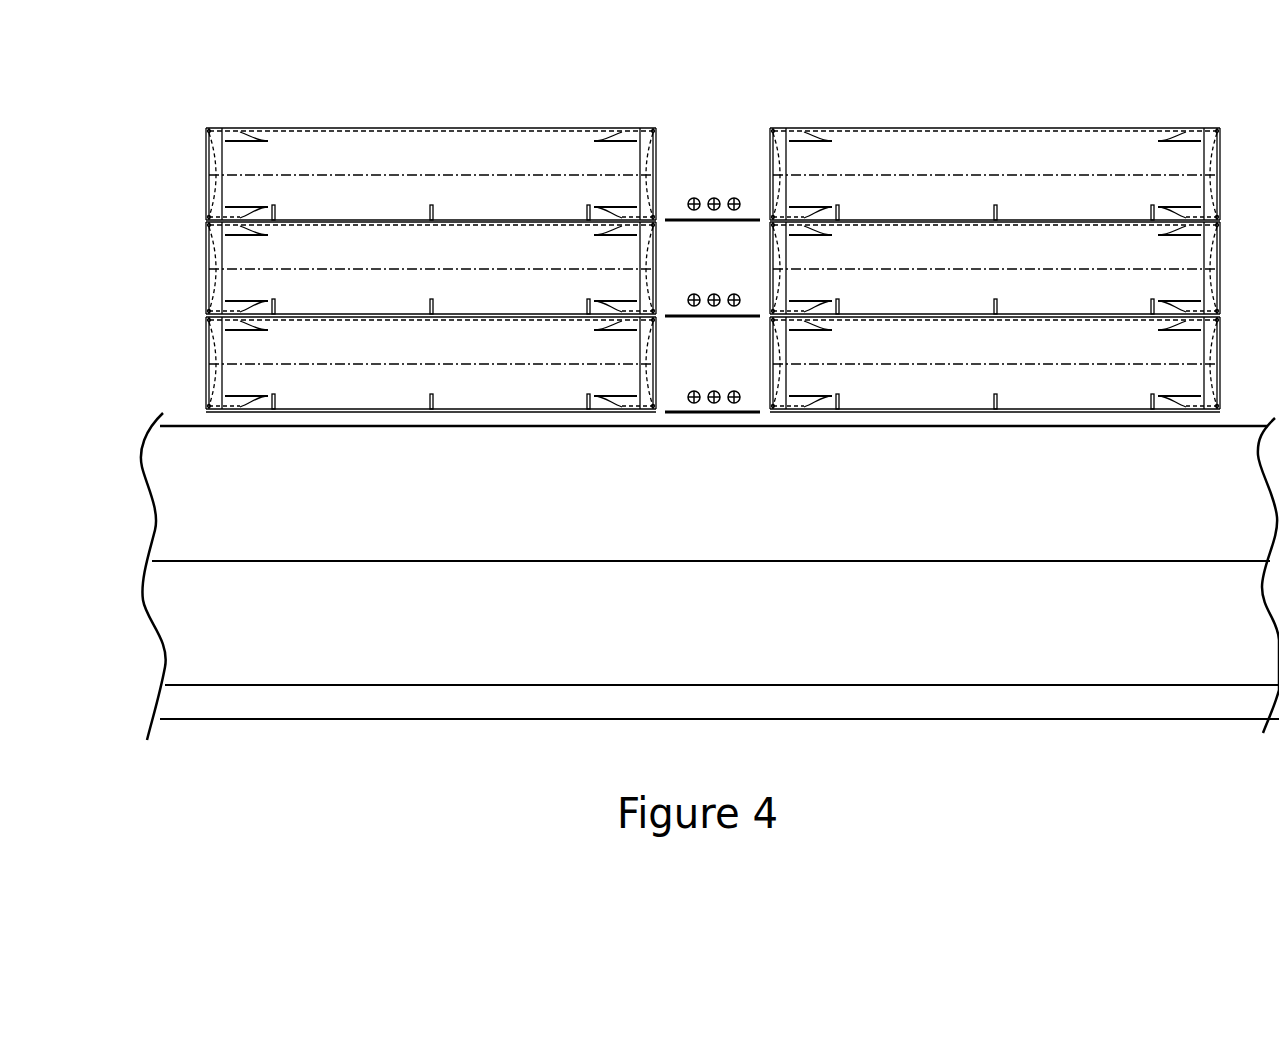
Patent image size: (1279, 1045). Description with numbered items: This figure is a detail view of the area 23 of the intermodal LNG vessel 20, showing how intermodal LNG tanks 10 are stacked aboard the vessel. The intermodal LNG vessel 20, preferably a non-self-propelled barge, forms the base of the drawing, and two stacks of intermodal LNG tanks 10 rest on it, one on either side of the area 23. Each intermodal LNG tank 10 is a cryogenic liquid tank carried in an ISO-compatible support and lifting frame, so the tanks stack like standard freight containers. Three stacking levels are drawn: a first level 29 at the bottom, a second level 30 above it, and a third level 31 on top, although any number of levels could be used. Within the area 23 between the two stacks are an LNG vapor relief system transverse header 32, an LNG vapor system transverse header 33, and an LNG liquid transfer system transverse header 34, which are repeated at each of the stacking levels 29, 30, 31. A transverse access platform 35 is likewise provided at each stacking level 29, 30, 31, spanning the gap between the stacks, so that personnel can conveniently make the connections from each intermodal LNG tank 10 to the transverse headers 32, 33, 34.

The intermodal LNG tank 10 is at (1030, 153).
The intermodal LNG vessel 20 is at (1025, 718).
The area 23 is at (726, 279).
The first level 29 is at (188, 356).
The second level 30 is at (192, 266).
The third level 31 is at (192, 165).
The LNG vapor relief system transverse header 32 is at (737, 402).
The LNG vapor system transverse header 33 is at (718, 403).
The LNG liquid transfer system transverse header 34 is at (700, 403).
The transverse access platform 35 is at (678, 413).